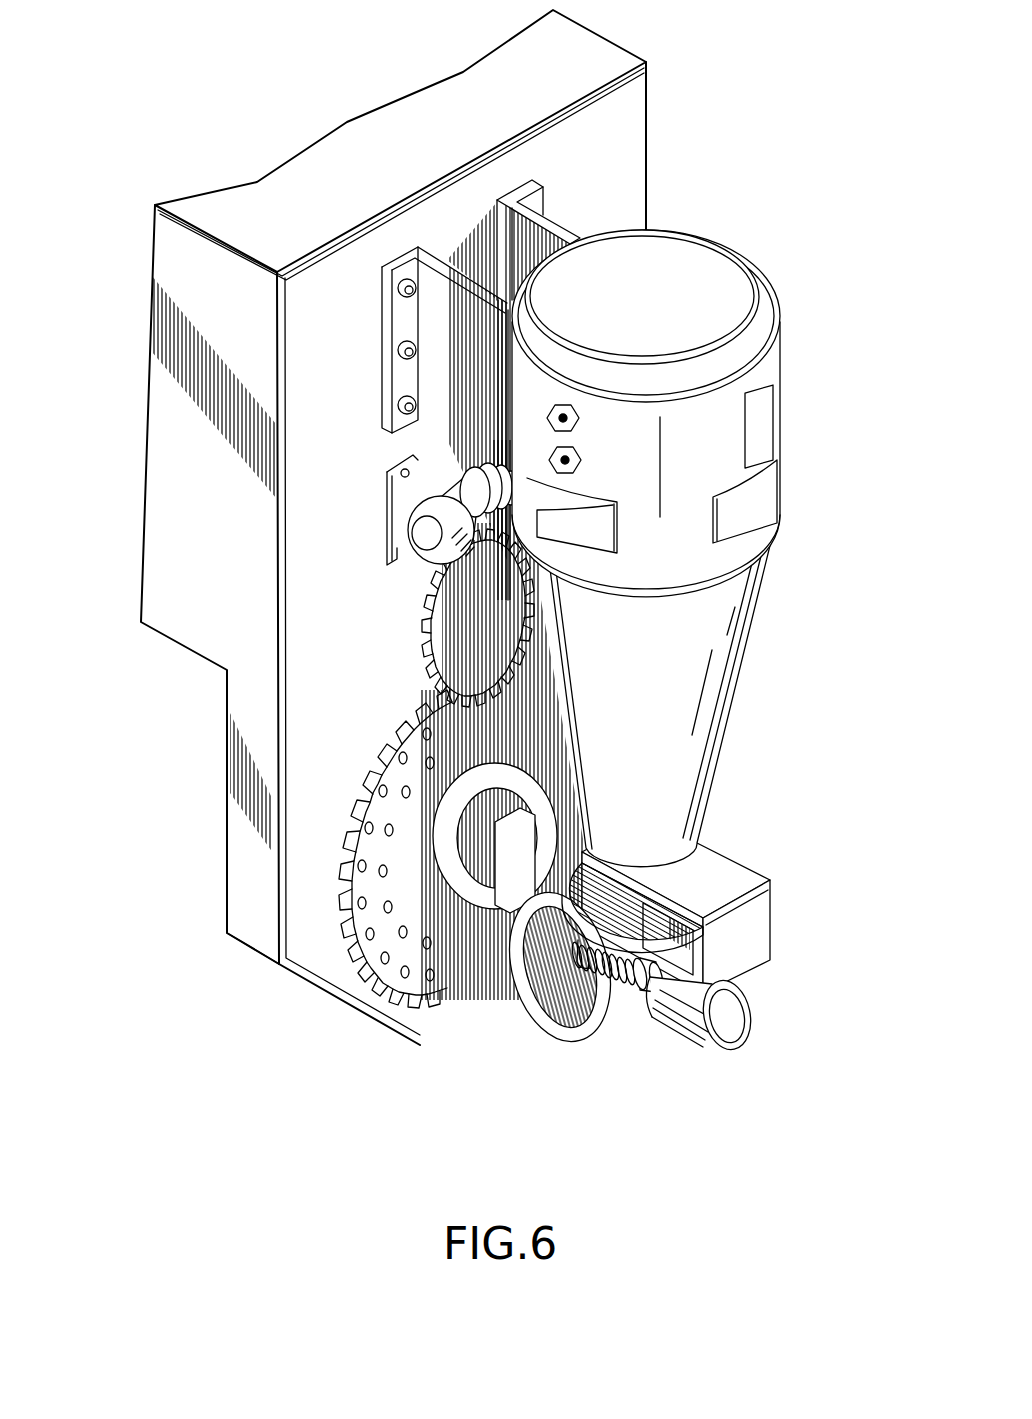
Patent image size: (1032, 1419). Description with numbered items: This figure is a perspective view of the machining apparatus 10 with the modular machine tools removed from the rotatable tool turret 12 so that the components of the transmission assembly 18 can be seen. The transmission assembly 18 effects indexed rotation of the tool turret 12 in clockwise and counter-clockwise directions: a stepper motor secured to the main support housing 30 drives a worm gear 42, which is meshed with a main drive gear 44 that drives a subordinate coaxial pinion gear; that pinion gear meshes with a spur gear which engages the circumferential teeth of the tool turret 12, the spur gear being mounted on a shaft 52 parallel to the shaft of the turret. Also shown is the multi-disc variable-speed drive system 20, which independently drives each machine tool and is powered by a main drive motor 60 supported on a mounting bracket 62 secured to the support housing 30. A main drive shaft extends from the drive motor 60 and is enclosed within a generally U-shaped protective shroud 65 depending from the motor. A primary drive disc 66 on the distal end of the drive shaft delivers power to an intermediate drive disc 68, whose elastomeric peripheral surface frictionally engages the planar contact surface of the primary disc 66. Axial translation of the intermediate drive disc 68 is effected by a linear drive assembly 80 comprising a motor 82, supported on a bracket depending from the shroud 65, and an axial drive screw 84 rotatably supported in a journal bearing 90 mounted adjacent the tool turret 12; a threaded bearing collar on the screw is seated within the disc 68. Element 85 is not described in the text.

The machining apparatus 10 is at (474, 594).
The tool turret 12 is at (335, 922).
The transmission assembly 18 is at (688, 686).
The multi-disc variable-speed drive system 20 is at (312, 801).
The main support housing 30 is at (628, 122).
The worm gear 42 is at (487, 478).
The main drive gear 44 is at (422, 622).
The shaft 52 is at (430, 688).
The main drive motor 60 is at (700, 270).
The mounting bracket 62 is at (430, 327).
The protective shroud 65 is at (758, 610).
The primary drive disc 66 is at (723, 896).
The intermediate drive disc 68 is at (577, 1040).
The linear drive assembly 80 is at (560, 1003).
The motor 82 is at (736, 1014).
The axial drive screw 84 is at (610, 1018).
The housing end plate 85 is at (753, 938).
The journal bearing 90 is at (510, 900).